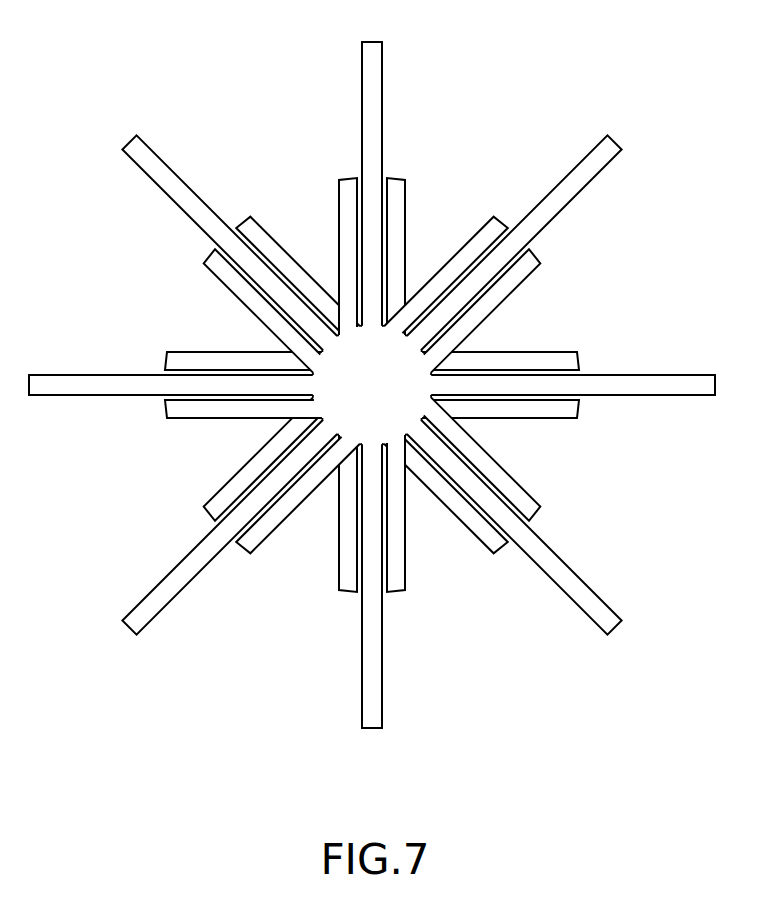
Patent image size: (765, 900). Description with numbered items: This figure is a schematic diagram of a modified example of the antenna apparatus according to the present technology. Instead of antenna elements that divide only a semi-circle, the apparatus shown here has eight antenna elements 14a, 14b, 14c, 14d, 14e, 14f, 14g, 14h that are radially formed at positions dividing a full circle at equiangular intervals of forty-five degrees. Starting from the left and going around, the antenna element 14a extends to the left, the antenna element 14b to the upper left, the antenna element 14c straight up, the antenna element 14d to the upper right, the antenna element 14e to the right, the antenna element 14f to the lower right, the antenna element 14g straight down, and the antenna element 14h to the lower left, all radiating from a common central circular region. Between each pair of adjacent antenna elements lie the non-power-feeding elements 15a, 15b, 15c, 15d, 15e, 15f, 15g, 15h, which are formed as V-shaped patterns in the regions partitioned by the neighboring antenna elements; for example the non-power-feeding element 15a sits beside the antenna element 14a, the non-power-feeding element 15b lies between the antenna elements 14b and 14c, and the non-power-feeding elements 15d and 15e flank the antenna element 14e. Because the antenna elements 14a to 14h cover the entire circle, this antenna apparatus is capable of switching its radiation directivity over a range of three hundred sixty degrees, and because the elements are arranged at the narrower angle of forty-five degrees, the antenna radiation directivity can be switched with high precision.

The antenna element 14a is at (42, 375).
The antenna element 14b is at (148, 150).
The antenna element 14c is at (382, 55).
The antenna element 14d is at (592, 151).
The antenna element 14e is at (700, 375).
The antenna element 14f is at (592, 619).
The antenna element 14g is at (381, 713).
The antenna element 14h is at (150, 621).
The non-power-feeding element 15a is at (192, 352).
The non-power-feeding element 15b is at (267, 236).
The non-power-feeding element 15c is at (405, 202).
The non-power-feeding element 15d is at (566, 352).
The non-power-feeding element 15e is at (560, 420).
The non-power-feeding element 15f is at (473, 538).
The non-power-feeding element 15g is at (338, 566).
The non-power-feeding element 15h is at (215, 495).